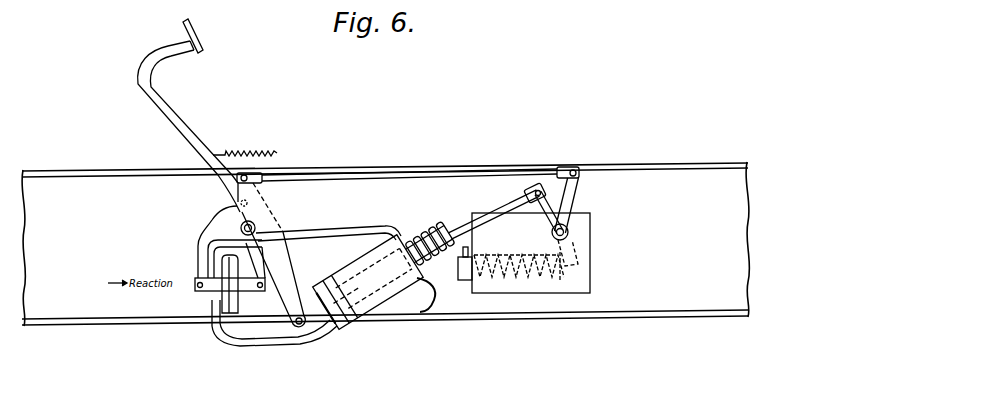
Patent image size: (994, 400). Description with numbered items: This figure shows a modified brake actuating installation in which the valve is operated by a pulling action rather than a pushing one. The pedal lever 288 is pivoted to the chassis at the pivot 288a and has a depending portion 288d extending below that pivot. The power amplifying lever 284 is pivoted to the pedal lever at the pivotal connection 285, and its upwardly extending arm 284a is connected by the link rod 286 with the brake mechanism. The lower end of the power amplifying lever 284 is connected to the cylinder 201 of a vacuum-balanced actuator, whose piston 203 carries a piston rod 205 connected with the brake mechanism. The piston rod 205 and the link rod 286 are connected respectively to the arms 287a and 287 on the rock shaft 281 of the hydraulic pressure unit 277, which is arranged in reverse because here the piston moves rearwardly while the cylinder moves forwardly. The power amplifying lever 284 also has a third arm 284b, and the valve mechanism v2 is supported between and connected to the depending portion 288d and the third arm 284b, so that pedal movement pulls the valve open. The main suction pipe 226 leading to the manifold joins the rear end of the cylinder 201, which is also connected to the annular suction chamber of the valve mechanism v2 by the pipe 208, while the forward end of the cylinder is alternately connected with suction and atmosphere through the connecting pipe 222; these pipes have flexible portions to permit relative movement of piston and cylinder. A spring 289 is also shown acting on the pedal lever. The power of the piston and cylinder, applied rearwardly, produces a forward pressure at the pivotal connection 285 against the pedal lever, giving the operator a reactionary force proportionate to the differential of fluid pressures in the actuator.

The pedal lever 288 is at (186, 128).
The spring 289 is at (245, 145).
The link rod 286 is at (420, 176).
The upwardly extending arm 284a is at (253, 186).
The pedal lever pivot 288a is at (240, 203).
The pivotal connection 285 is at (257, 225).
The power amplifying lever 284 is at (287, 283).
The third arm 284b is at (197, 260).
The depending portion 288d is at (264, 262).
The valve mechanism v2 is at (238, 292).
The connecting pipe 222 is at (283, 344).
The cylinder 201 is at (357, 319).
The piston 203 is at (350, 332).
The pipe 208 is at (353, 232).
The main suction pipe 226 is at (430, 303).
The piston rod 205 is at (486, 221).
The arm 287 is at (571, 201).
The arm 287a is at (550, 222).
The rock shaft 281 is at (570, 232).
The hydraulic pressure unit 277 is at (537, 291).